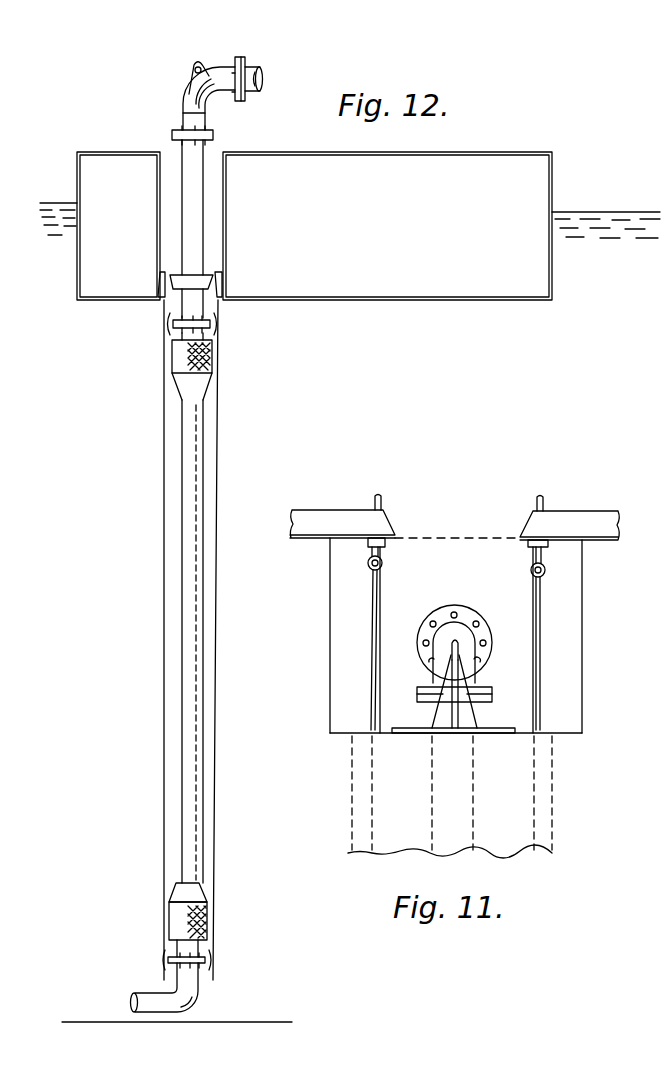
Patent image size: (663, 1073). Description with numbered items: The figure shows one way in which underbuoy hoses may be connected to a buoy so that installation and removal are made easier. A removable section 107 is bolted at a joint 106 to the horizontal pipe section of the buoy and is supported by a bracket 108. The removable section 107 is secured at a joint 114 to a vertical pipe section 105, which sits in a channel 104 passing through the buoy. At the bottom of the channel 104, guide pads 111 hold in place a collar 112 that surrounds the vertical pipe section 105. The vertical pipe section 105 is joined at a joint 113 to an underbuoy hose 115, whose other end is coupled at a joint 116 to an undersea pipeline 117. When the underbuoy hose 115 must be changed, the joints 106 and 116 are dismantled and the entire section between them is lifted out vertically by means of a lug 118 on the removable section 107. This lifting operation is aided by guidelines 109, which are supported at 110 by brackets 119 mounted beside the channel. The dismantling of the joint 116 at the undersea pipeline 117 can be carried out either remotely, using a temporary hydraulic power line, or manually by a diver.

In FIG. 12, the channel 104 is at (228, 208).
In FIG. 12, the vertical pipe section 105 is at (192, 222).
In FIG. 12, the bolted joint 106 is at (245, 58).
In FIG. 11, the bolted joint 106 is at (493, 653).
In FIG. 12, the removable section 107 is at (192, 95).
In FIG. 11, the removable section 107 is at (445, 643).
In FIG. 11, the bracket 108 is at (443, 710).
In FIG. 12, the guidelines 109 is at (158, 593).
In FIG. 11, the guidelines 109 is at (537, 590).
In FIG. 11, the guideline support 110 is at (531, 570).
In FIG. 12, the guide pads 111 is at (160, 287).
In FIG. 12, the collar 112 is at (205, 282).
In FIG. 12, the joint 113 is at (217, 323).
In FIG. 12, the securing joint 114 is at (213, 135).
In FIG. 12, the underbuoy hose 115 is at (188, 488).
In FIG. 12, the coupling joint 116 is at (165, 957).
In FIG. 12, the undersea pipeline 117 is at (198, 998).
In FIG. 12, the lug 118 is at (190, 70).
In FIG. 11, the brackets 119 is at (537, 518).